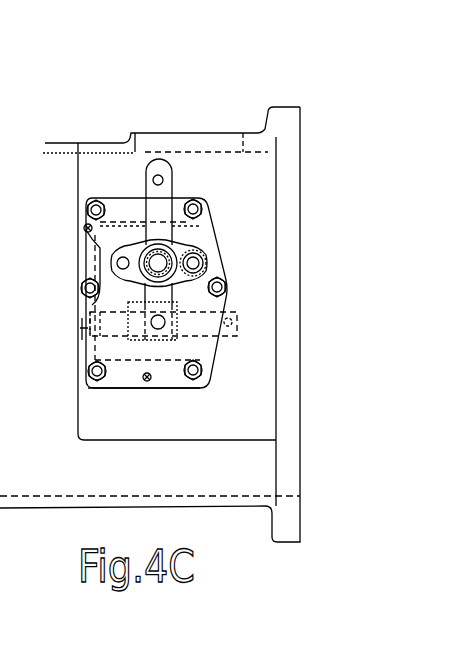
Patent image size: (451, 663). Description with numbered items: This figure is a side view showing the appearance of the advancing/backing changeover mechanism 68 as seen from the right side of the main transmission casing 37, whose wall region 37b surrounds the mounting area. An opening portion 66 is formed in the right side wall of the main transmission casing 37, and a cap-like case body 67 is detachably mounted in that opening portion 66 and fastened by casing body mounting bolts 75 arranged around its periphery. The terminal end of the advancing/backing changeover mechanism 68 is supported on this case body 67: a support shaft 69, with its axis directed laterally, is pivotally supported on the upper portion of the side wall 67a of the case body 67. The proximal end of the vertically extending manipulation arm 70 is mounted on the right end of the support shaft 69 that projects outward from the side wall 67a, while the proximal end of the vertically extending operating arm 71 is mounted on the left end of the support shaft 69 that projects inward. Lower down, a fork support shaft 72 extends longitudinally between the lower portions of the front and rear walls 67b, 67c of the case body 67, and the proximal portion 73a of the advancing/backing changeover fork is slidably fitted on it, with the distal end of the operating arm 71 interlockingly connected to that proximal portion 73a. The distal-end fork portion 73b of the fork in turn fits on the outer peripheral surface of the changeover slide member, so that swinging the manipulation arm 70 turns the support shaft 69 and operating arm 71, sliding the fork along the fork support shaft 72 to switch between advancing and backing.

The main transmission casing 37 is at (183, 95).
The case wall 37b is at (252, 211).
The opening portion 66 is at (123, 240).
The case body 67 is at (80, 363).
The side wall 67a is at (170, 360).
The front wall 67b is at (232, 280).
The rear wall 67c is at (82, 328).
The advancing/backing changeover mechanism 68 is at (12, 201).
The support shaft 69 is at (170, 257).
The manipulation arm 70 is at (142, 245).
The operating arm 71 is at (148, 315).
The fork support shaft 72 is at (238, 332).
The proximal portion 73a is at (240, 302).
The distal-end fork portion 73b is at (165, 210).
The casing body mounting bolts 75 is at (200, 207).